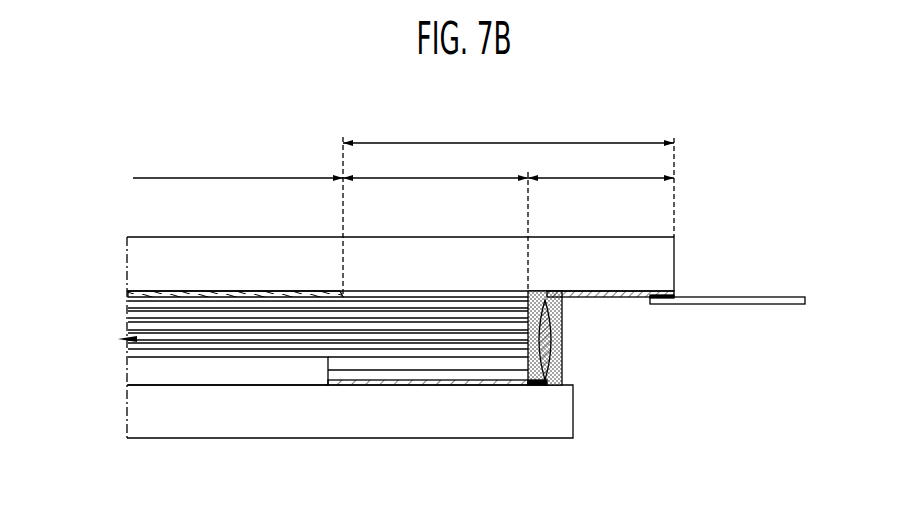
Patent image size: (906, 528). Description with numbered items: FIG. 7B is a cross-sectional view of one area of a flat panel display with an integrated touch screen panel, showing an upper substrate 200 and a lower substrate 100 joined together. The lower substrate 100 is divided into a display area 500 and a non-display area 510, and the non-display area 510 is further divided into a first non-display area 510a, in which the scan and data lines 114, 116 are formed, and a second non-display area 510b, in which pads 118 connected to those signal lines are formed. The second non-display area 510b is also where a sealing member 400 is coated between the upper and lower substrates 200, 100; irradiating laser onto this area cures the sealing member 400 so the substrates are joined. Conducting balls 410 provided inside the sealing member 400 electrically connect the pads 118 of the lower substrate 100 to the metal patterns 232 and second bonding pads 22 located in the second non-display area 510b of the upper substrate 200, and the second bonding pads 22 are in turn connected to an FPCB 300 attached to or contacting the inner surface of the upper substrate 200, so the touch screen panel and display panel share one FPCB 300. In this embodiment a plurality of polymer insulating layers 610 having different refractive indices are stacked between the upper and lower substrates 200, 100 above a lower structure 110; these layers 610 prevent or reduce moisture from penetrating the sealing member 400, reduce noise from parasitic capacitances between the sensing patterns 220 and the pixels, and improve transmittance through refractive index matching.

The lower substrate 100 is at (567, 413).
The lower structure block 110 is at (130, 377).
The scan line 114 is at (428, 435).
The data line 116 is at (385, 383).
The pad 118 is at (541, 383).
The upper substrate 200 is at (665, 267).
The sensing pattern 220 is at (128, 292).
The metal pattern 232 is at (583, 291).
The second bonding pad 22 is at (663, 300).
The FPCB 300 is at (777, 305).
The sealing member 400 is at (562, 323).
The conducting ball 410 is at (552, 353).
The display area 500 is at (238, 166).
The non-display area 510 is at (508, 133).
The first non-display area 510a is at (435, 168).
The second non-display area 510b is at (601, 168).
The polymer insulating layer 610 is at (118, 297).